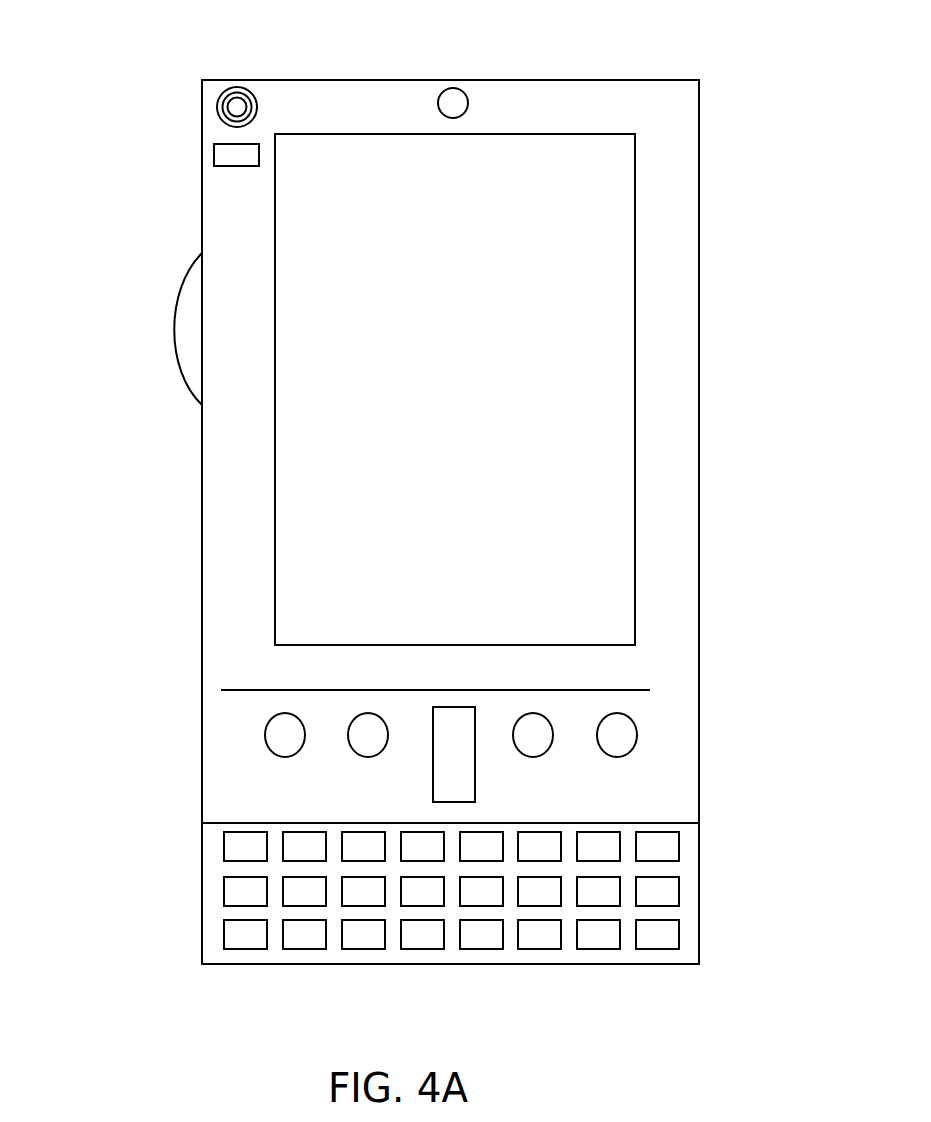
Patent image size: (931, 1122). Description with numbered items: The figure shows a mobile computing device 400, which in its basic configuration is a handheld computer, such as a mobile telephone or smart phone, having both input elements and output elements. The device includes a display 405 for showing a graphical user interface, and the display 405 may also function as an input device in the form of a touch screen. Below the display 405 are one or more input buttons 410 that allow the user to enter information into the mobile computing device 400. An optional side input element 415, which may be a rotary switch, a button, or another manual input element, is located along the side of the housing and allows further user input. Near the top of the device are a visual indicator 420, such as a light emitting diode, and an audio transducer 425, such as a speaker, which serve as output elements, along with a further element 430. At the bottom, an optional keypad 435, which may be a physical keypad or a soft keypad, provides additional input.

The mobile computing device 400 is at (686, 98).
The display 405 is at (385, 558).
The input buttons 410 is at (452, 760).
The side input element 415 is at (192, 328).
The visual indicator 420 is at (216, 162).
The audio transducer 425 is at (216, 109).
The speaker 430 is at (458, 104).
The keypad 435 is at (212, 938).